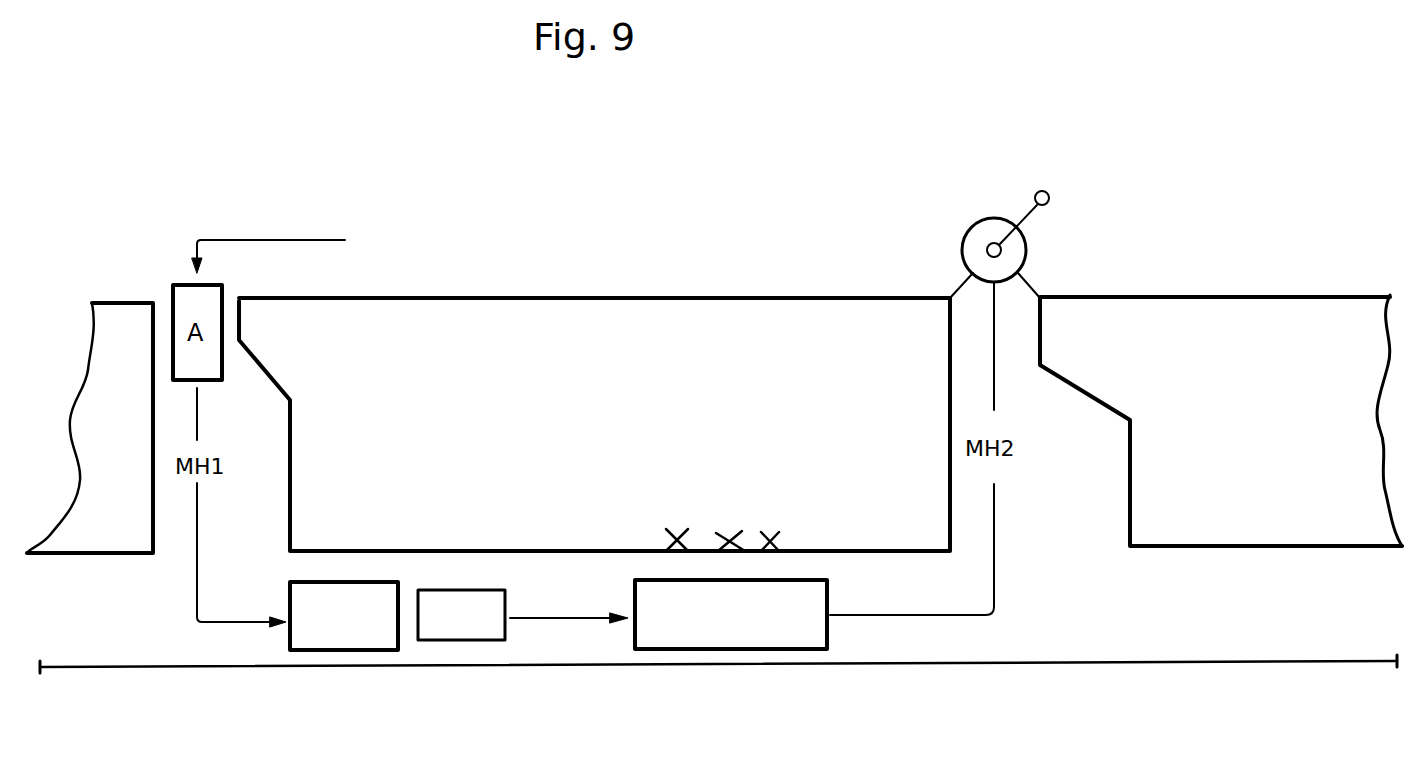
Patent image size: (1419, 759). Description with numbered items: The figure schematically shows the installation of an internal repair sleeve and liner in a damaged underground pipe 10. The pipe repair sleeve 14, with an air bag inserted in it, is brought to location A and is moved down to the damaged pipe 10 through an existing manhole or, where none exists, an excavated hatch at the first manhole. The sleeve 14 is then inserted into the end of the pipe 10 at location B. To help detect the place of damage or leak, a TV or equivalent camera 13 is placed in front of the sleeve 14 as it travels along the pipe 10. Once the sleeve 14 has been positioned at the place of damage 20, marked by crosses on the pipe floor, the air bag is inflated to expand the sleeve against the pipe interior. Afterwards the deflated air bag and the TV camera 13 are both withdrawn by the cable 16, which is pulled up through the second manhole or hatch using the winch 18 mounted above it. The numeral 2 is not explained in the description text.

The tank / vessel 2 is at (224, 292).
The pipe 10 is at (605, 668).
The TV camera 13 is at (505, 597).
The pipe repair sleeve 14 is at (372, 650).
The cable 16 is at (965, 618).
The winch 18 is at (965, 232).
The place of damage 20 is at (716, 524).